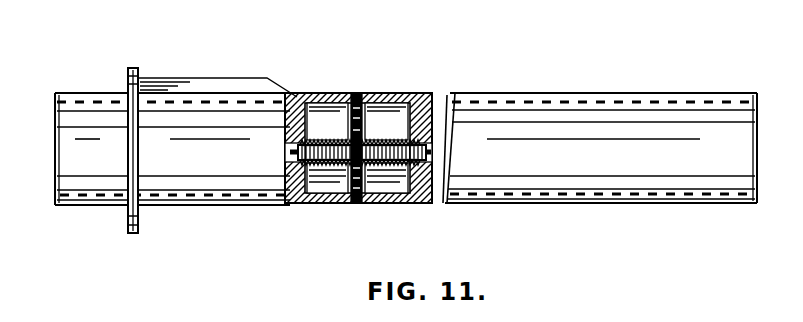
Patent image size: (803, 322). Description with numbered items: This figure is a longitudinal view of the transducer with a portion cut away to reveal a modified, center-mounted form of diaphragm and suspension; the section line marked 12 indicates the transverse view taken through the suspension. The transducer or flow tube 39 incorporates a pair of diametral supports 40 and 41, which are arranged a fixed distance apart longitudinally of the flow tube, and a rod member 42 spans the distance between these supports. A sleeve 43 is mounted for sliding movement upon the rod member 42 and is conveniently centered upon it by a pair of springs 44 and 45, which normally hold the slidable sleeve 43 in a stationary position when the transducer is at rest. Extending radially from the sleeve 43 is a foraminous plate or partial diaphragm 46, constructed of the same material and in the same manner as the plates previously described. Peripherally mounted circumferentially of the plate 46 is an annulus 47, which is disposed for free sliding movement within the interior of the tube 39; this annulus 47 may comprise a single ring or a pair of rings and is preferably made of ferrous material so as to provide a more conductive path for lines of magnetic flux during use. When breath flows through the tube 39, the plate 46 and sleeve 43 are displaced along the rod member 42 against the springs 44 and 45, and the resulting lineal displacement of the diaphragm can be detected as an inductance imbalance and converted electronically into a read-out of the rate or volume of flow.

The section line of FIG. 12 is at (332, 93).
The flow tube 39 is at (643, 93).
The diametral support 40 is at (290, 177).
The diametral support 41 is at (440, 202).
The rod member 42 is at (290, 203).
The sleeve 43 is at (363, 197).
The spring 44 is at (317, 137).
The spring 45 is at (398, 136).
The foraminous plate 46 is at (372, 93).
The annulus 47 is at (355, 93).